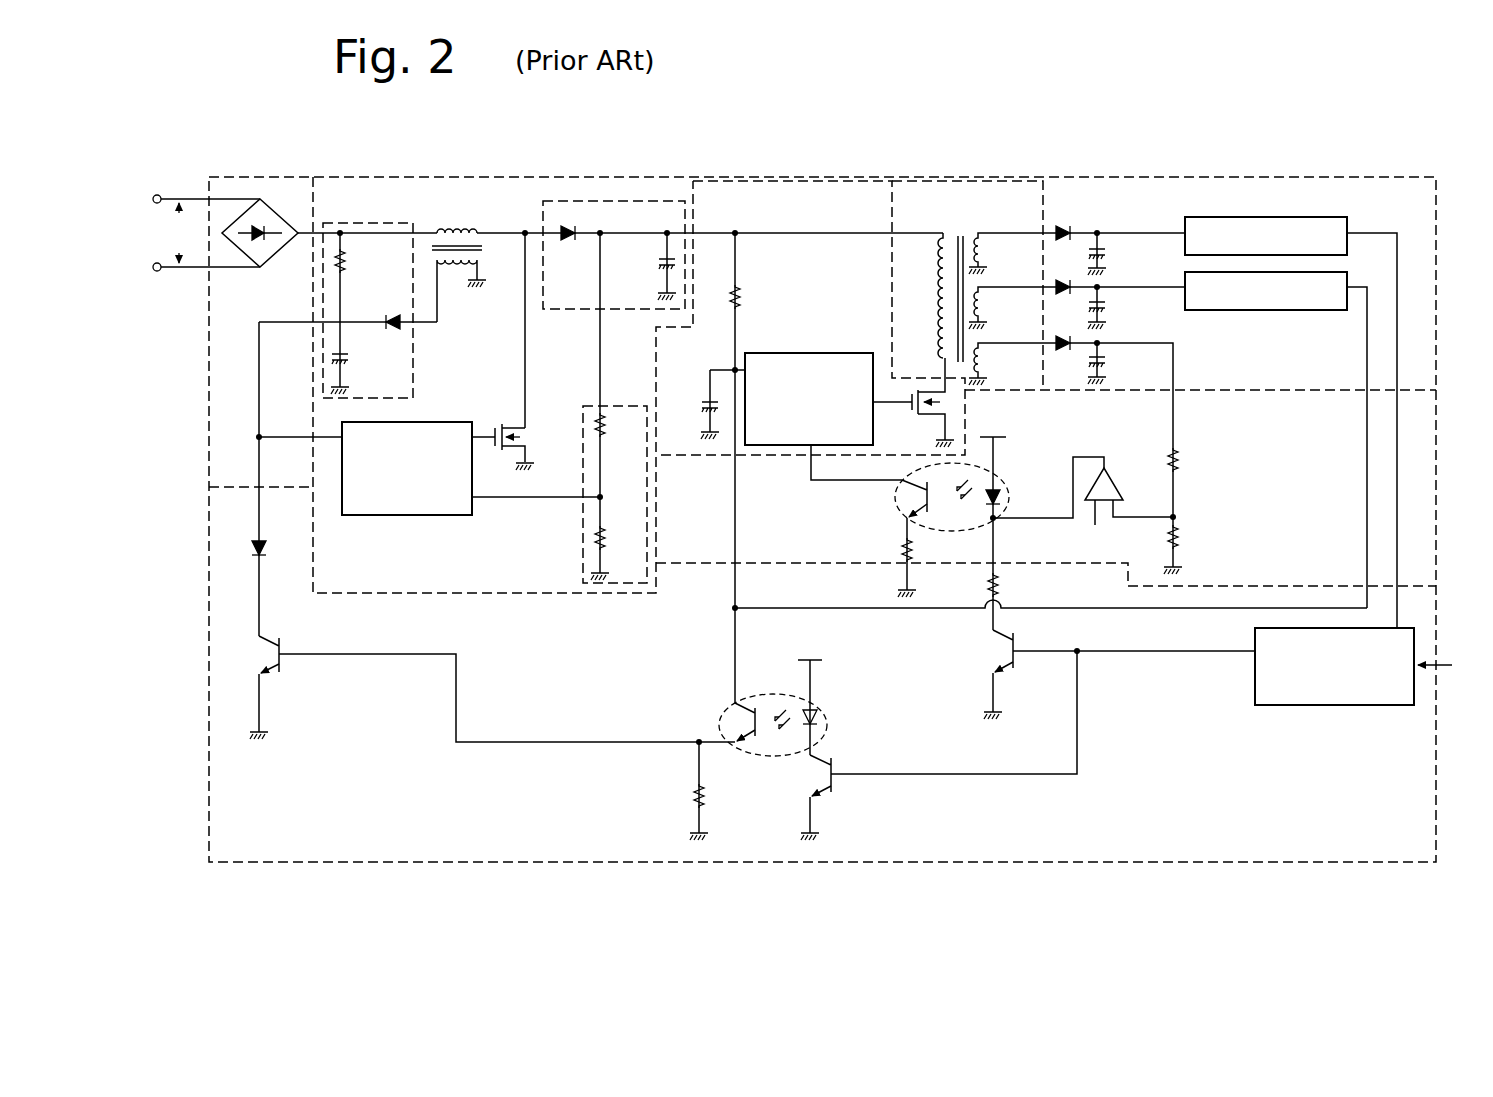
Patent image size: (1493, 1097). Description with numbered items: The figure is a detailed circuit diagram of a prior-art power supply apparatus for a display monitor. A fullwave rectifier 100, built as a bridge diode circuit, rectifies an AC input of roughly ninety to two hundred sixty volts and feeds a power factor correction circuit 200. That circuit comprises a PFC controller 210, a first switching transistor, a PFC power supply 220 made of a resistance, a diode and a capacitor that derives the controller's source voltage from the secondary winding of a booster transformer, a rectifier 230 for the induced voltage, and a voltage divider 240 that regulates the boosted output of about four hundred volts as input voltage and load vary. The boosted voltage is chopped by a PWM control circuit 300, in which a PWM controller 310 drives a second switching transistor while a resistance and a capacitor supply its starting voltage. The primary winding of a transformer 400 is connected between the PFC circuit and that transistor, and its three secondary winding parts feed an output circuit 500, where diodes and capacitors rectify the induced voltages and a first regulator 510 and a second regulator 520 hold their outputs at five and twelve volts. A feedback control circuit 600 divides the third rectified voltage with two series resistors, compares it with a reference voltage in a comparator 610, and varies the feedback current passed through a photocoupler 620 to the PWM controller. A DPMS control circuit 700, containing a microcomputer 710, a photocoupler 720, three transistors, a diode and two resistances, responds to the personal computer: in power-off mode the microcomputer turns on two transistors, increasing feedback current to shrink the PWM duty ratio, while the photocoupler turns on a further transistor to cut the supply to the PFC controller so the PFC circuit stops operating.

The fullwave rectifier 100 is at (247, 177).
The power factor correction circuit 200 is at (487, 177).
The PFC controller 210 is at (432, 422).
The PFC power supply 220 is at (368, 223).
The rectifier 230 is at (563, 309).
The voltage divider 240 is at (583, 545).
The PWM control circuit 300 is at (752, 181).
The PWM controller 310 is at (823, 353).
The transformer 400 is at (952, 181).
The output circuit 500 is at (1192, 177).
The regulator 510 is at (1247, 217).
The regulator 520 is at (1245, 310).
The feedback control circuit 600 is at (1437, 522).
The comparator 610 is at (1110, 470).
The photocoupler 620 is at (1010, 462).
The DPMS control circuit 700 is at (1280, 862).
The microcomputer 710 is at (1272, 705).
The photocoupler 720 is at (822, 706).